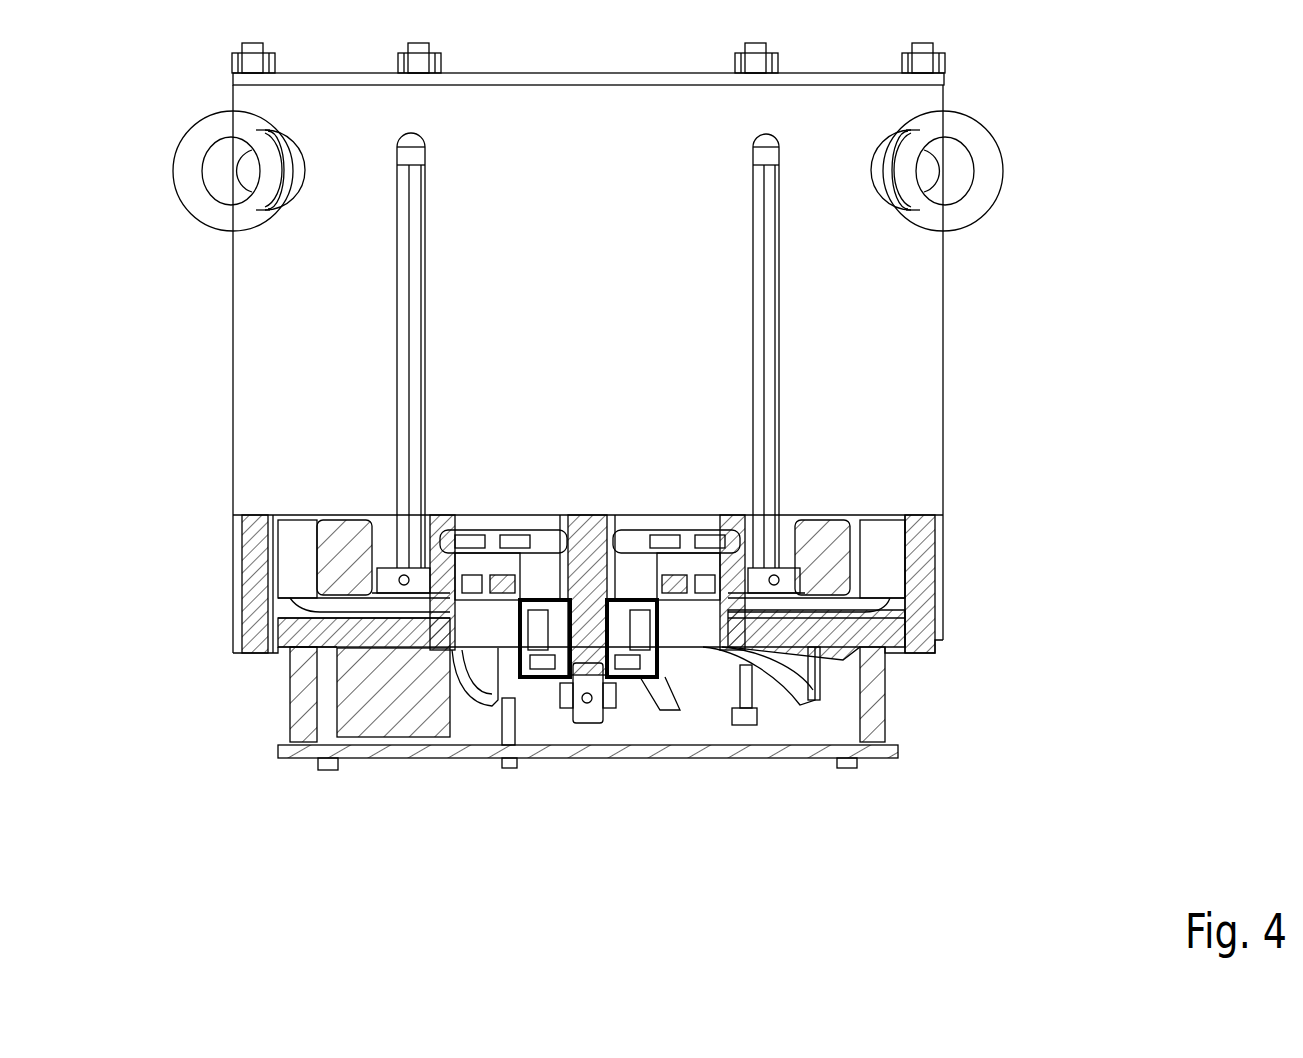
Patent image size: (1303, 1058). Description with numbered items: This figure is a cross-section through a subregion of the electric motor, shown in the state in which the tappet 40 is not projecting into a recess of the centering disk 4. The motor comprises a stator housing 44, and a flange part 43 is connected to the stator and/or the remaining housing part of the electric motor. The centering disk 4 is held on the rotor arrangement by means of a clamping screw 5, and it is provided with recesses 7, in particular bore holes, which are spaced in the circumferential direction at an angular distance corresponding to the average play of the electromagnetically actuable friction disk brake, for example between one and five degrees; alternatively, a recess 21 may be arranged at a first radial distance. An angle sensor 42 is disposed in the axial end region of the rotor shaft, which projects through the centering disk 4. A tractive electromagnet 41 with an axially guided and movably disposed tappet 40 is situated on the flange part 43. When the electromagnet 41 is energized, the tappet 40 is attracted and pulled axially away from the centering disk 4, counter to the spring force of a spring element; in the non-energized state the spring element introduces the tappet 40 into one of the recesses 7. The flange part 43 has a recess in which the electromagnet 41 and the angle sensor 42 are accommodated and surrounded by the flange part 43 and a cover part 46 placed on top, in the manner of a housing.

The centering disk 4 is at (435, 535).
The clamping screw 5 is at (472, 540).
The recess, in particular bore hole 7 is at (393, 582).
The recess at first radial distance 21 is at (593, 548).
The tappet 40 is at (280, 658).
The tractive electromagnet 41 is at (375, 705).
The angle sensor 42 is at (650, 697).
The flange part 43 is at (873, 685).
The stator housing 44 is at (607, 302).
The cover part 46 is at (777, 748).